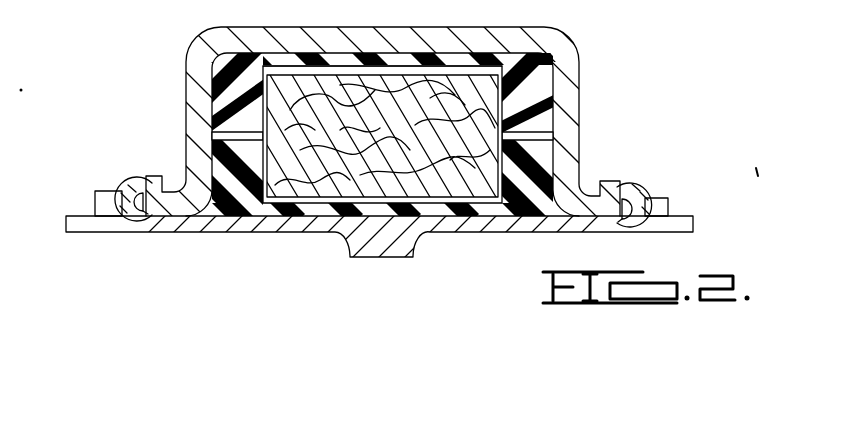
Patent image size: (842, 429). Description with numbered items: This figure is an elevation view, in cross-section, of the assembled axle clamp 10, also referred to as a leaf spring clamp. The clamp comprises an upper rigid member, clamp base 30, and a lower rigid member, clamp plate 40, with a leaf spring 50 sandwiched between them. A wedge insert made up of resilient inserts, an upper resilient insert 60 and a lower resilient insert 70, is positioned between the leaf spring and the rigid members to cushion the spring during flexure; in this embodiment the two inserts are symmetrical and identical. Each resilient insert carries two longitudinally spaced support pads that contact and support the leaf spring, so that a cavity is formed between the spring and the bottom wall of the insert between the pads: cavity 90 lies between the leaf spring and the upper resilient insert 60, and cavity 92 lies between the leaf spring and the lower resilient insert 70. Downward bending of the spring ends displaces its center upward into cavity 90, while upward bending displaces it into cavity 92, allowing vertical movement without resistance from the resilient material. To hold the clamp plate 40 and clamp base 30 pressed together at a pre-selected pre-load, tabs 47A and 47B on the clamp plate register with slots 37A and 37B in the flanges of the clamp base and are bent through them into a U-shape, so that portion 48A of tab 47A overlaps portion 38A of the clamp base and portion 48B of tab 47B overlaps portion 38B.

The axle clamp 10 is at (646, 93).
The clamp base 30 is at (567, 61).
The slot 37A is at (108, 200).
The slot 37B is at (667, 210).
The portion of clamp base 38A is at (143, 212).
The portion of clamp base 38B is at (612, 208).
The clamp plate 40 is at (211, 236).
The tab 47A is at (135, 172).
The tab 47B is at (633, 191).
The portion of tab 48A is at (151, 181).
The portion of tab 48B is at (607, 190).
The leaf spring 50 is at (463, 180).
The upper resilient insert 60 is at (445, 62).
The lower resilient insert 70 is at (323, 210).
The cavity 90 is at (383, 70).
The cavity 92 is at (272, 198).